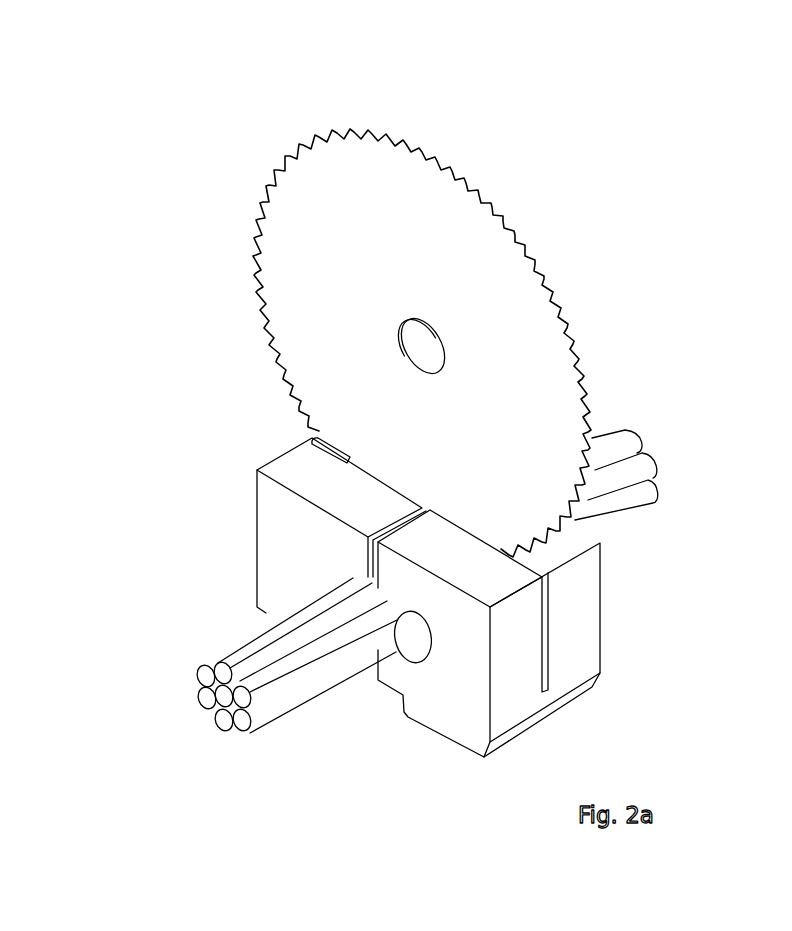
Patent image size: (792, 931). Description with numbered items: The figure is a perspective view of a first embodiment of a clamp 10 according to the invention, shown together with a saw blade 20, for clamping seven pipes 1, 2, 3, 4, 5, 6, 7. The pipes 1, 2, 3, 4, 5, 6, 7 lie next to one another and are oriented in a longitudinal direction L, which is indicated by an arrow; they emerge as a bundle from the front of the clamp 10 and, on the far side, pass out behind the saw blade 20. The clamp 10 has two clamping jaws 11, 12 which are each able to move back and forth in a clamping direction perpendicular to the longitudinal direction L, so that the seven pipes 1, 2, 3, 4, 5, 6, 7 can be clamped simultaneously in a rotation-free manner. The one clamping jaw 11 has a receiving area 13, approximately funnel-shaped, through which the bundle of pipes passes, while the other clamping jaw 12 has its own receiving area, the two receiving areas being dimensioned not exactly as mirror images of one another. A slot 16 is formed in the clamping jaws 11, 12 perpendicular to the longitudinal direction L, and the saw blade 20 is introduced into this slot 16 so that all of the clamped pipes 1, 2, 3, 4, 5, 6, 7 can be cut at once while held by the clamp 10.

The pipe 1 is at (221, 667).
The pipe 2 is at (248, 704).
The pipe 3 is at (245, 727).
The pipe 4 is at (223, 728).
The pipe 5 is at (205, 705).
The pipe 6 is at (200, 679).
The pipe 7 is at (220, 693).
The clamp 10 is at (430, 443).
The clamping jaw 11 is at (535, 633).
The clamping jaw 12 is at (267, 535).
The receiving area 13 is at (353, 577).
The slot 16 is at (543, 607).
The saw blade 20 is at (433, 217).
The longitudinal direction L is at (750, 457).